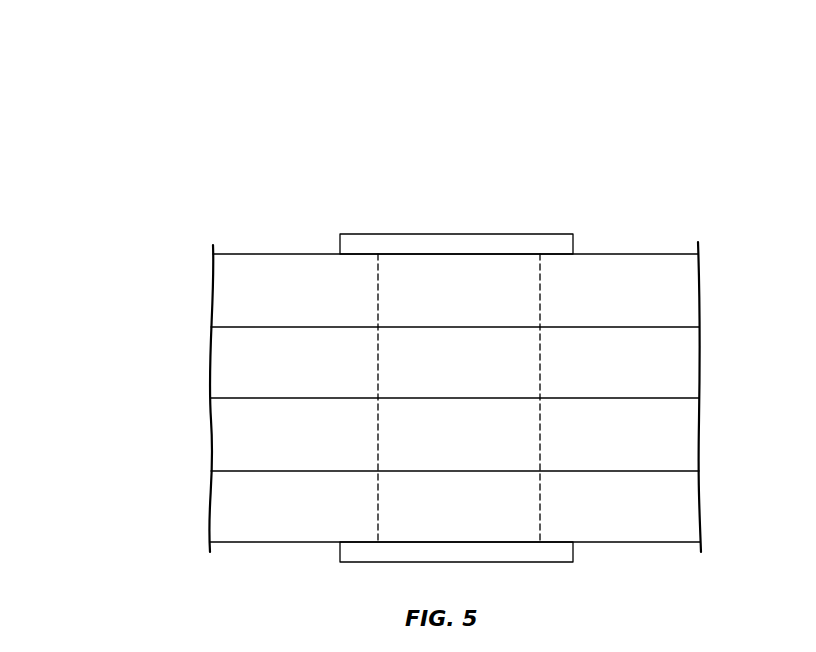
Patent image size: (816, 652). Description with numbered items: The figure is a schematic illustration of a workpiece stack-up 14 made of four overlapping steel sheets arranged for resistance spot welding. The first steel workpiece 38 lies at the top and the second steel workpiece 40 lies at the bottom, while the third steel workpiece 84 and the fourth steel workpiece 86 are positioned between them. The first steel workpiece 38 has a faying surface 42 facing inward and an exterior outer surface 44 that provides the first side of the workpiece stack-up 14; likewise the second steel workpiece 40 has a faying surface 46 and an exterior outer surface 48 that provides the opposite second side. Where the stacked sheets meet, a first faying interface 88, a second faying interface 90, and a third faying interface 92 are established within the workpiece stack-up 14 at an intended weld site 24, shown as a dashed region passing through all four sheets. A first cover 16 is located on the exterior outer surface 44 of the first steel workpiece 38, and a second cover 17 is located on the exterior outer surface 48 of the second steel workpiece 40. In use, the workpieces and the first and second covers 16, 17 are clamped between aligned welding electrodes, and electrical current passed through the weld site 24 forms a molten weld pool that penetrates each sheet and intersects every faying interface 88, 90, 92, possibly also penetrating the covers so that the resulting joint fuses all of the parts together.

The workpiece stack-up 14 is at (138, 240).
The first cover 16 is at (450, 230).
The second cover 17 is at (573, 552).
The weld site 24 is at (378, 303).
The first steel workpiece 38 is at (642, 306).
The second steel workpiece 40 is at (642, 522).
The faying surface 42 is at (234, 330).
The exterior outer surface 44 is at (641, 254).
The faying surface 46 is at (234, 469).
The exterior outer surface 48 is at (247, 543).
The third steel workpiece 84 is at (635, 378).
The fourth steel workpiece 86 is at (635, 448).
The first faying interface 88 is at (392, 328).
The second faying interface 90 is at (394, 399).
The third faying interface 92 is at (396, 472).